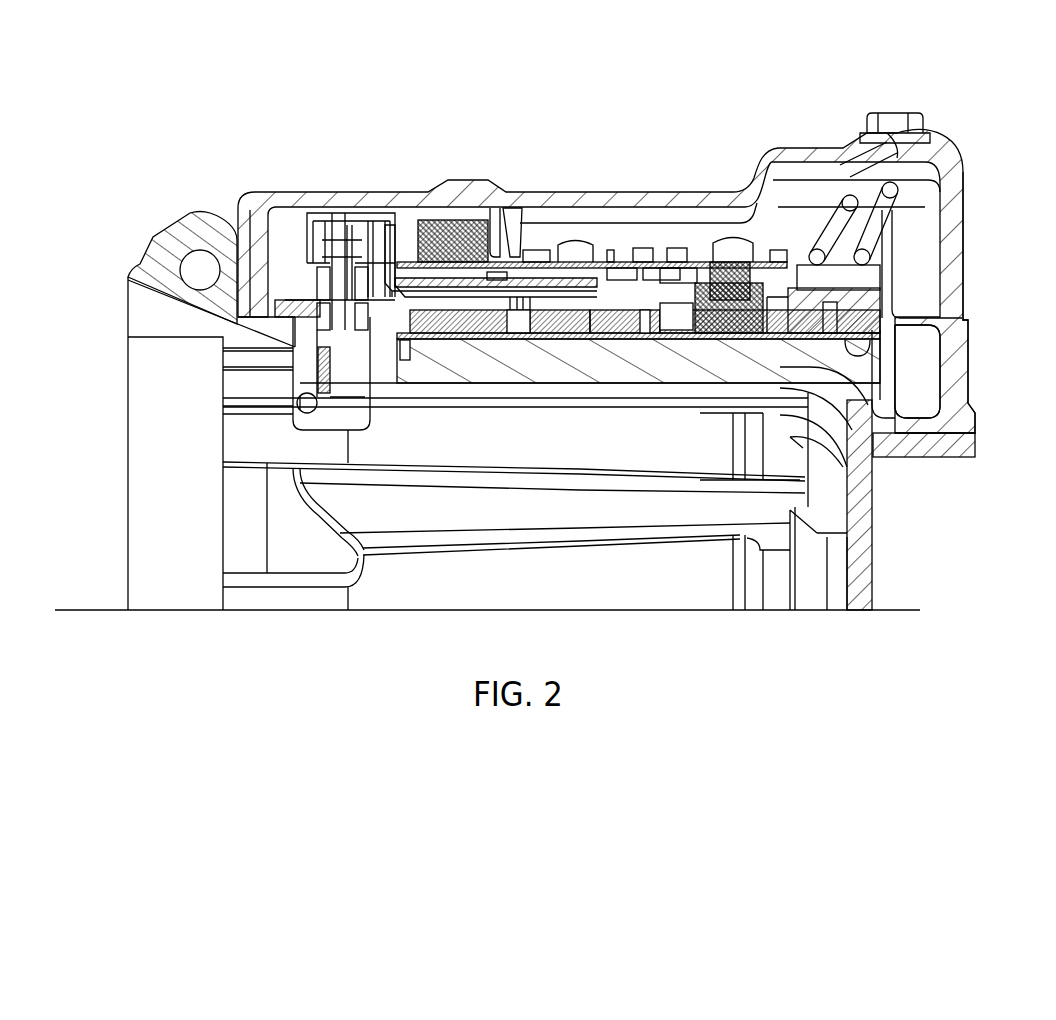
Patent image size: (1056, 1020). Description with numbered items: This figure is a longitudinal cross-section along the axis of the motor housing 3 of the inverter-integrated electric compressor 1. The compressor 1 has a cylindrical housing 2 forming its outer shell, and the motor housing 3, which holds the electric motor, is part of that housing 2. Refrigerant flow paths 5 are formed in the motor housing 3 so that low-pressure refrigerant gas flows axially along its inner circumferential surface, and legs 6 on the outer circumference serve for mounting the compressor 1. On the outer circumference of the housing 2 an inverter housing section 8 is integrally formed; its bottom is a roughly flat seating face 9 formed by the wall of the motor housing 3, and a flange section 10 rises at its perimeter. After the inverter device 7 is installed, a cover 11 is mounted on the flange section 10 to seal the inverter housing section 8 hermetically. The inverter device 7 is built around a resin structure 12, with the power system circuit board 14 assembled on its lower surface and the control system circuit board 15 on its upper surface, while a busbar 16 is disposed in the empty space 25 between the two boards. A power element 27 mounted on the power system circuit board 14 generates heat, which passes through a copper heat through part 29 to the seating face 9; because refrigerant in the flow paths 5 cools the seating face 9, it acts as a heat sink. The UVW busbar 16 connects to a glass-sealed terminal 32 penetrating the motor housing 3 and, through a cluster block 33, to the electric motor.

The inverter-integrated electric compressor 1 is at (411, 100).
The housing 2 is at (116, 304).
The motor housing 3 is at (850, 520).
The refrigerant flow paths 5 is at (500, 395).
The legs 6 is at (176, 245).
The inverter device 7 is at (551, 225).
The inverter housing section 8 is at (976, 240).
The seating face 9 is at (457, 337).
The flange section 10 is at (955, 370).
The cover 11 is at (710, 205).
The resin structure 12 is at (880, 298).
The power system circuit board 14 is at (675, 345).
The control system circuit board 15 is at (520, 250).
The busbar 16 is at (455, 282).
The empty space 25 is at (606, 273).
The power element 27 is at (610, 340).
The heat through part 29 is at (564, 340).
The glass-sealed terminal 32 is at (348, 313).
The cluster block 33 is at (313, 378).